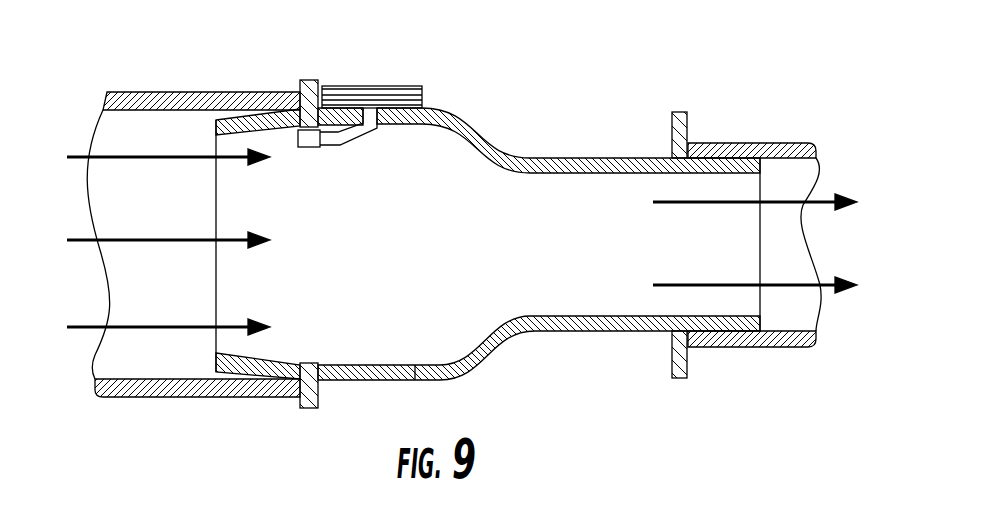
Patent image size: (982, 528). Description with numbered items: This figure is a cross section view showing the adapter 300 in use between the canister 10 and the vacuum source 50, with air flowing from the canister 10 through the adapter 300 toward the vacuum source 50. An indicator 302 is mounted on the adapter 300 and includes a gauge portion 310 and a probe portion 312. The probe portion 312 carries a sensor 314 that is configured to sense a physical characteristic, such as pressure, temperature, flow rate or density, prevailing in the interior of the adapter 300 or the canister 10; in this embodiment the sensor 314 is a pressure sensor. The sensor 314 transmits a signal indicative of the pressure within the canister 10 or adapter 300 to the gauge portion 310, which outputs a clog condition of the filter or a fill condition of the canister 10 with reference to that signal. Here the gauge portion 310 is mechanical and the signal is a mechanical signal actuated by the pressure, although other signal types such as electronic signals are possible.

The canister 10 is at (140, 80).
The vacuum source 50 is at (766, 121).
The adapter 300 is at (465, 107).
The indicator 302 is at (340, 70).
The gauge portion 310 is at (398, 73).
The probe portion 312 is at (368, 145).
The sensor 314 is at (308, 148).